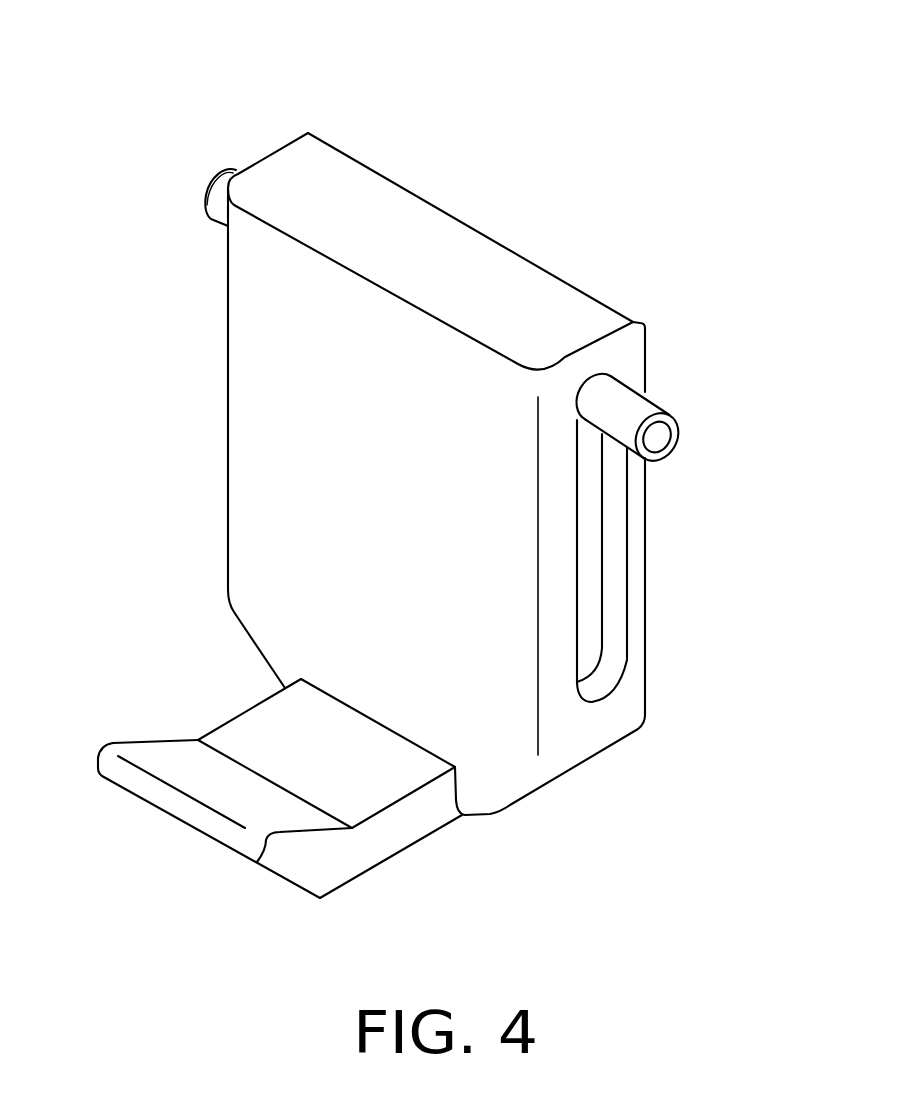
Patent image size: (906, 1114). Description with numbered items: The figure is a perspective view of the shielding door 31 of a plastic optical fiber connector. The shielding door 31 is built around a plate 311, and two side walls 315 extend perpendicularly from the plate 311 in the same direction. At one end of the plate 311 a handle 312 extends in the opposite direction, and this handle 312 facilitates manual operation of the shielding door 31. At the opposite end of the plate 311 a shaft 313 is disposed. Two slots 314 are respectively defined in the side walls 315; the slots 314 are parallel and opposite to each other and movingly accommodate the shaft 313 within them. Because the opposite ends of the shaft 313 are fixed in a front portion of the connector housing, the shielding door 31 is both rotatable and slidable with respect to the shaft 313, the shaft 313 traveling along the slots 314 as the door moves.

The shielding door 31 is at (180, 66).
The plate 311 is at (475, 688).
The handle 312 is at (192, 762).
The shaft 313 is at (618, 410).
The slot 314 is at (607, 595).
The side wall 315 is at (631, 703).